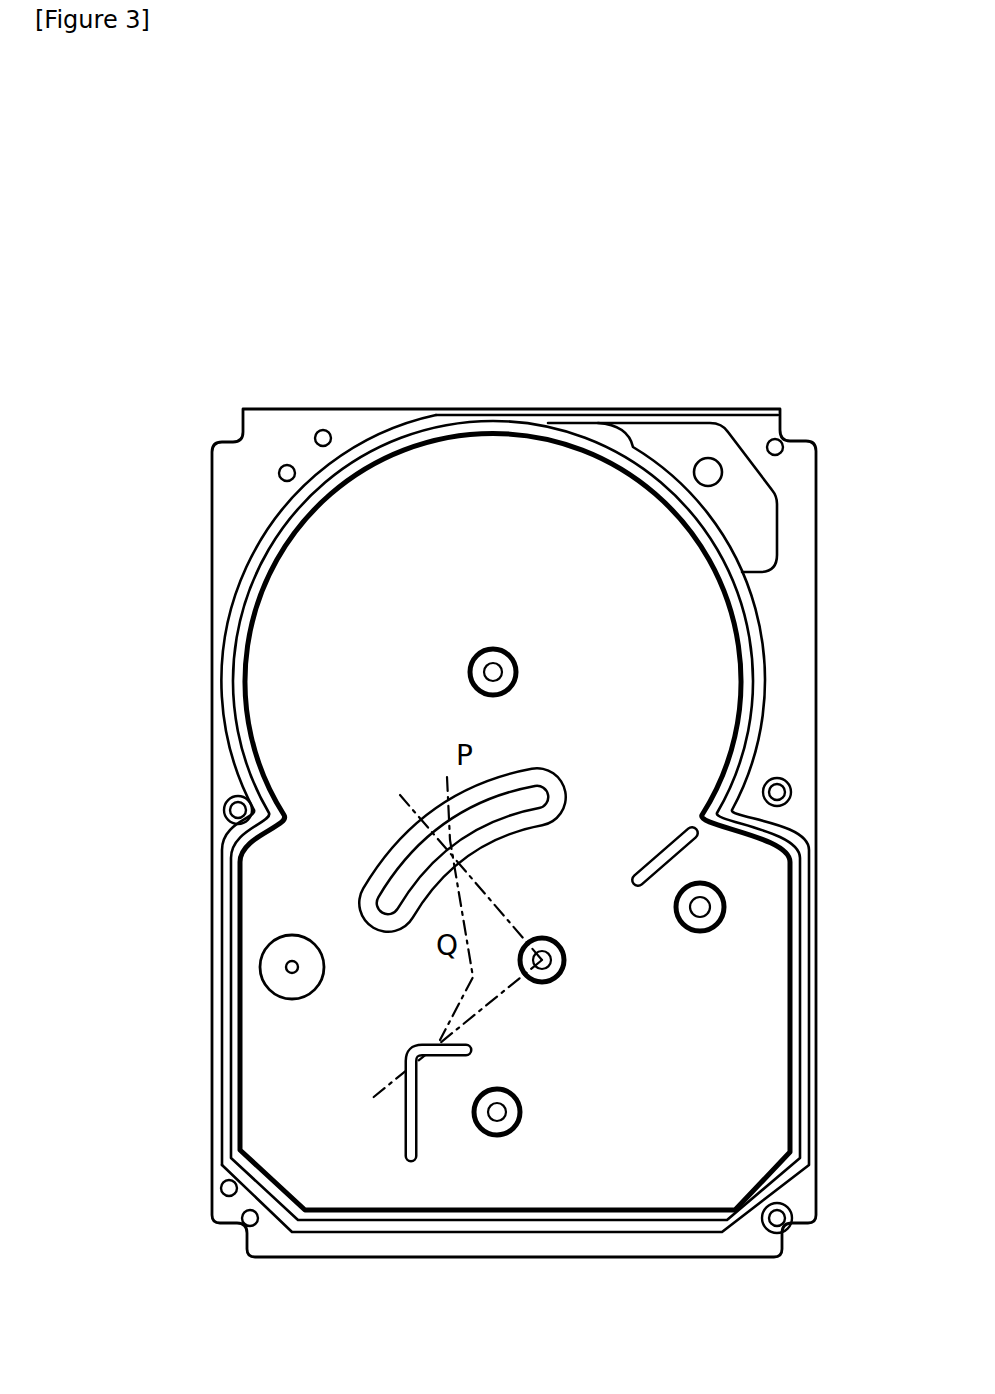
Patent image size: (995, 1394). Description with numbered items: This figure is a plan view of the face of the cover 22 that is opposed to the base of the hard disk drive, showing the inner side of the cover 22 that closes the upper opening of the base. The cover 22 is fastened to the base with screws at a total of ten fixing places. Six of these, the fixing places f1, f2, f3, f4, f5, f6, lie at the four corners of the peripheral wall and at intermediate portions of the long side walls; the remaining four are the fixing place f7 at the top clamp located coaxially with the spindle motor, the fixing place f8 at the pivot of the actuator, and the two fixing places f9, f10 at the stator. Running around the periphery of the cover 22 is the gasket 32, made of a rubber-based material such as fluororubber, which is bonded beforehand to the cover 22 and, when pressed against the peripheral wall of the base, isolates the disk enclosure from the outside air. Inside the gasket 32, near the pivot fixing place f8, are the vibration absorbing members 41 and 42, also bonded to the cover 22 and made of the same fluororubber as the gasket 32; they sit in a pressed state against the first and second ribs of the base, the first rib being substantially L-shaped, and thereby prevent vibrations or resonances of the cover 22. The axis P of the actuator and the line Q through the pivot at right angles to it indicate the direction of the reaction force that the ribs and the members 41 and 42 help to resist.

The cover 22 is at (757, 428).
The gasket 32 is at (808, 995).
The vibration absorbing member 41 is at (668, 852).
The vibration absorbing member 42 is at (443, 1043).
The fixing place f1 is at (248, 1226).
The fixing place f2 is at (781, 1230).
The fixing place f3 is at (320, 432).
The fixing place f4 is at (781, 440).
The fixing place f5 is at (233, 806).
The fixing place f6 is at (785, 790).
The fixing place f7 is at (496, 670).
The fixing place f8 is at (545, 957).
The fixing place f9 is at (500, 1110).
The fixing place f10 is at (698, 912).